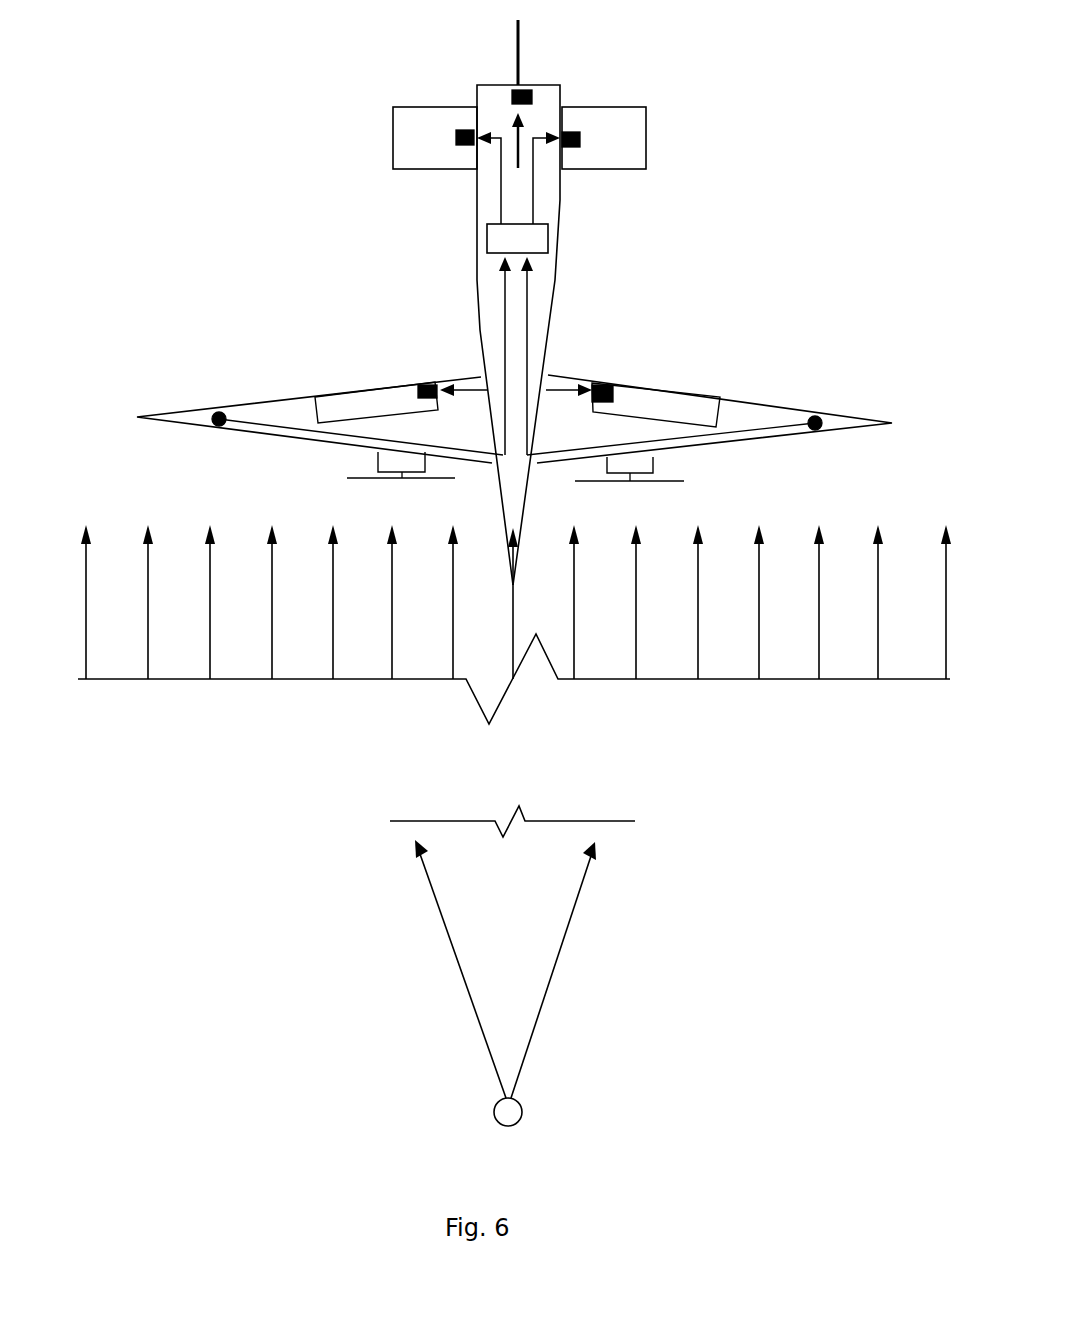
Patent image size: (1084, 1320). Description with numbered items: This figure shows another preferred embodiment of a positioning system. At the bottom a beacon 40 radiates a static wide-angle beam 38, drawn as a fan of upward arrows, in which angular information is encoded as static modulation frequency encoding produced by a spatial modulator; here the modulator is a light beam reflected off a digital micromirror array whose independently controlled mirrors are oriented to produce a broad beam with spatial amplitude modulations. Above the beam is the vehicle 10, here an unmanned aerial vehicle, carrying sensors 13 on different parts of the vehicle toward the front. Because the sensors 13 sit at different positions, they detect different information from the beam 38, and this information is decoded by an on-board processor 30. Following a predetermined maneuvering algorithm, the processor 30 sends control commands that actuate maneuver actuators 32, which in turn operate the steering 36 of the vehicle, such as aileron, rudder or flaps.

The vehicle 10 is at (562, 218).
The sensors 13 is at (218, 412).
The on-board processor 30 is at (548, 238).
The maneuver actuators 32 is at (603, 383).
The steering 36 is at (388, 383).
The static wide-angle beam 38 is at (509, 951).
The beacon 40 is at (520, 1106).